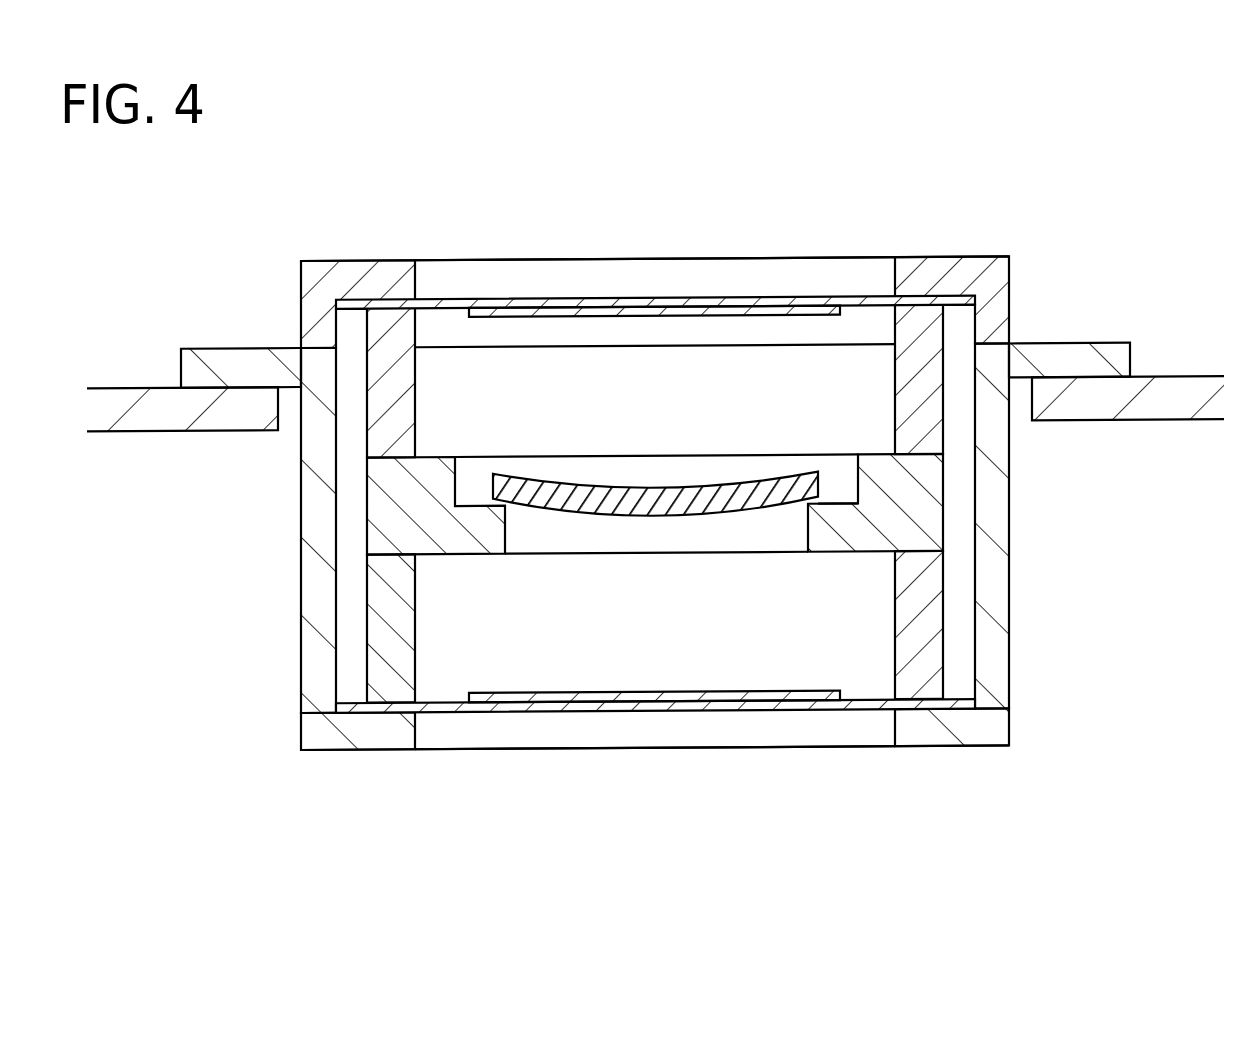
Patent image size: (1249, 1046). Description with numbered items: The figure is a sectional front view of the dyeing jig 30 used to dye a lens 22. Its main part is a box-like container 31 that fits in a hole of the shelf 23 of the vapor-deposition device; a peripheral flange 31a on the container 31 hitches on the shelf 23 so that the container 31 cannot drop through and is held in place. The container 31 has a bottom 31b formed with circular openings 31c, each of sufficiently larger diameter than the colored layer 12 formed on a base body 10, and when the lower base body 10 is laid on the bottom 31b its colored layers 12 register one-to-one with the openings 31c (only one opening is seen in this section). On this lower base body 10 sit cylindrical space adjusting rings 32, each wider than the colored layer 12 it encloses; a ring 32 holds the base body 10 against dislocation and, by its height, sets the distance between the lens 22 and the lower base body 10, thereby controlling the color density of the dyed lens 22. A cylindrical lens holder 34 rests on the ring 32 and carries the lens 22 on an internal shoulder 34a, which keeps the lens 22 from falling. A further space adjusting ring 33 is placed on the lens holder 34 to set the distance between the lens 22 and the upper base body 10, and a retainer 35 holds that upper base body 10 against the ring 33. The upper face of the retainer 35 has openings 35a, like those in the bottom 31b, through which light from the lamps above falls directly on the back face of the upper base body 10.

The base body 10 is at (512, 300).
The colored layer 12 is at (658, 309).
The lens 22 is at (588, 492).
The shelf 23 is at (115, 402).
The dyeing jig 30 is at (430, 147).
The container 31 is at (998, 530).
The peripheral flange 31a is at (1095, 357).
The bottom 31b is at (940, 732).
The opening 31c is at (688, 792).
The space adjusting ring 32 is at (387, 653).
The space adjusting ring 33 is at (392, 342).
The lens holder 34 is at (382, 508).
The internal shoulder 34a is at (841, 468).
The retainer 35 is at (962, 270).
The opening 35a is at (730, 228).